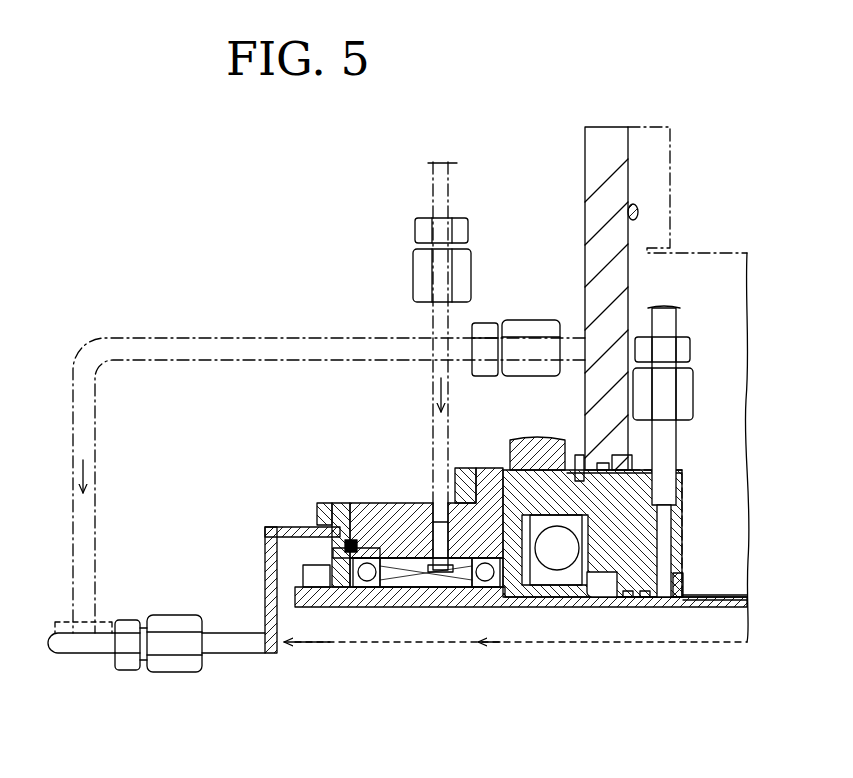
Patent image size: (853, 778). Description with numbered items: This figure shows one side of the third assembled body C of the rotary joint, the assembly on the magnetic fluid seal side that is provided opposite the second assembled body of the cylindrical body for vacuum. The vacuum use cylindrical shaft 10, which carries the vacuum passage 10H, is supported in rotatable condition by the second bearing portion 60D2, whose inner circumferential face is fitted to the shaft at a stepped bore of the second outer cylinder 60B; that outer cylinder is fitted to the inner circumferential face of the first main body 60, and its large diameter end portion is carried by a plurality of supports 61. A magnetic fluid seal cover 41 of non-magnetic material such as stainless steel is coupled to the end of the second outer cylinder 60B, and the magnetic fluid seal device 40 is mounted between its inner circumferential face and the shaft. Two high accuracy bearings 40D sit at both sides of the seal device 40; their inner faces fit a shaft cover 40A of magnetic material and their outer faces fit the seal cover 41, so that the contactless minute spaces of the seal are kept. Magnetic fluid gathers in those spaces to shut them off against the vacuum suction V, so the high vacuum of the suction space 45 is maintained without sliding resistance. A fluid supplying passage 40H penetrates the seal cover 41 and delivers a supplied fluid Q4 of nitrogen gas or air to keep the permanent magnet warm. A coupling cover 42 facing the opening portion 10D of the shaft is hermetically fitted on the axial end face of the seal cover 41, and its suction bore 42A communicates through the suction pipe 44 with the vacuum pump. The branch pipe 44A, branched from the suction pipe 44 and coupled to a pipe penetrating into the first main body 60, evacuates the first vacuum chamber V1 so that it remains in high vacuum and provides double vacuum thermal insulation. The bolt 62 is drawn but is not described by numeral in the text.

The vacuum use cylindrical shaft 10 is at (635, 604).
The vacuum passage 10H is at (705, 618).
The opening portion 10D is at (321, 598).
The magnetic fluid seal device 40 is at (395, 600).
The shaft cover 40A is at (430, 582).
The bearings 40D is at (357, 590).
The fluid supplying passage 40H is at (440, 200).
The magnetic fluid seal cover 41 is at (388, 510).
The coupling cover 42 is at (265, 563).
The suction bore 42A is at (230, 644).
The suction pipe 44 is at (71, 644).
The branch pipe 44A is at (212, 338).
The suction space 45 is at (300, 552).
The first main body 60 is at (607, 148).
The second outer cylinder 60B is at (680, 528).
The second bearing portion 60D2 is at (580, 604).
The support 61 is at (535, 450).
The fastening bolt 62 is at (625, 508).
The third assembled body C is at (339, 383).
The supplied fluid Q4 is at (430, 397).
The vacuum suction V is at (88, 476).
The first vacuum chamber V1 is at (735, 447).